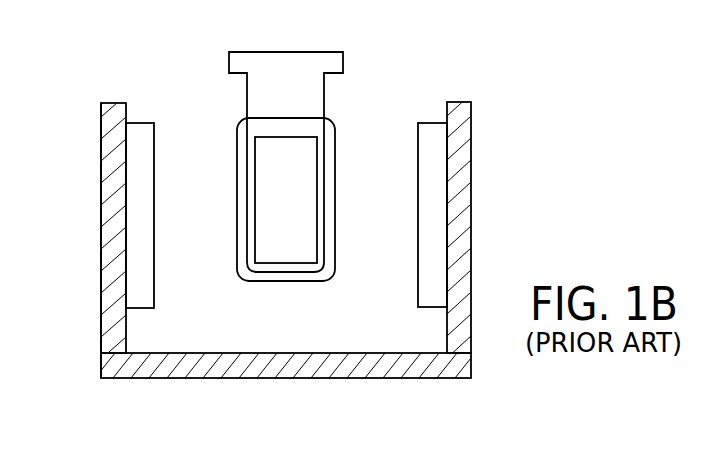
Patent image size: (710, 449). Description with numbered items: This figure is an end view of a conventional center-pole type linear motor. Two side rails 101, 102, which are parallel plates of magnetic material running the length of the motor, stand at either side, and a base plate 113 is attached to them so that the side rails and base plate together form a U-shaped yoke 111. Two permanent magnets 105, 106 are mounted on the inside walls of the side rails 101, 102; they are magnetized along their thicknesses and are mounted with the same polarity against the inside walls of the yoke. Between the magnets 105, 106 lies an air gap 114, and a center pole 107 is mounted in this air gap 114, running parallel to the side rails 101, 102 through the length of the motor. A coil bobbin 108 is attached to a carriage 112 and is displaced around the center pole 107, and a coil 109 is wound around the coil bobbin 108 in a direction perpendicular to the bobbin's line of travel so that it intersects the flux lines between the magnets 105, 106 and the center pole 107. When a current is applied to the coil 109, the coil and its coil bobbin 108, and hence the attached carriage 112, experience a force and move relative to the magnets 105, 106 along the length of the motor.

The side rail 101 is at (113, 102).
The side rail 102 is at (458, 102).
The permanent magnet 105 is at (154, 207).
The permanent magnet 106 is at (418, 205).
The center pole 107 is at (305, 212).
The coil bobbin 108 is at (238, 123).
The coil 109 is at (237, 243).
The yoke 111 is at (102, 213).
The carriage 112 is at (288, 52).
The base plate 113 is at (313, 378).
The air gap 114 is at (388, 318).